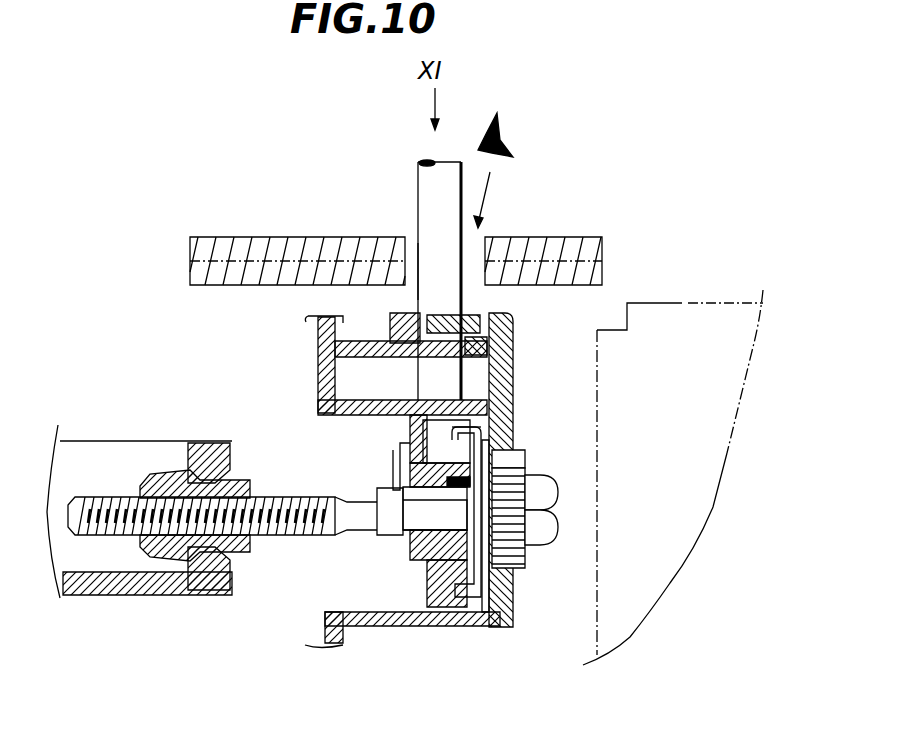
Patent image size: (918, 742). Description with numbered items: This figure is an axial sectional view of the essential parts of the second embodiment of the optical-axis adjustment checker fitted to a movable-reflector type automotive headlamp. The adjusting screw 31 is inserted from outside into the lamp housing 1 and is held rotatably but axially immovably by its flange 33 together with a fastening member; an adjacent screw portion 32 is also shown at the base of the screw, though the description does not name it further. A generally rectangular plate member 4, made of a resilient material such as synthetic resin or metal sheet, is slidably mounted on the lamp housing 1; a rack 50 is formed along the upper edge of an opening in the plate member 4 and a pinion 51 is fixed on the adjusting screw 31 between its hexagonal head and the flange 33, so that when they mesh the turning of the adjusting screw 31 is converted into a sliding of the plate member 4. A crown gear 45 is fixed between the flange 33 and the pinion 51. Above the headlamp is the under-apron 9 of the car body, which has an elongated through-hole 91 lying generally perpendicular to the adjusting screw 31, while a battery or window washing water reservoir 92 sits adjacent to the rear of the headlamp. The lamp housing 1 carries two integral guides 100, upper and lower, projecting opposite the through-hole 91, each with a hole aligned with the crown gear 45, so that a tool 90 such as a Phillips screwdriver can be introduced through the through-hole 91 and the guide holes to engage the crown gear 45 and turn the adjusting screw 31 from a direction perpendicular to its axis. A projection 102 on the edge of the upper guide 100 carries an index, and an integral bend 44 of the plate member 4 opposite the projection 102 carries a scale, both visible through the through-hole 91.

The lamp housing 1 is at (314, 352).
The plate member 4 is at (514, 617).
The under-apron 9 is at (225, 236).
The adjusting screw 31 is at (318, 535).
The bracket clip 32 is at (440, 565).
The flange 33 is at (475, 590).
The bend 44 is at (447, 310).
The crown gear 45 is at (500, 405).
The rack 50 is at (525, 467).
The pinion 51 is at (523, 568).
The tool 90 is at (418, 166).
The through-hole 91 is at (411, 243).
The battery or window washing water reservoir 92 is at (651, 302).
The guide 100 is at (483, 317).
The projection 102 is at (397, 317).